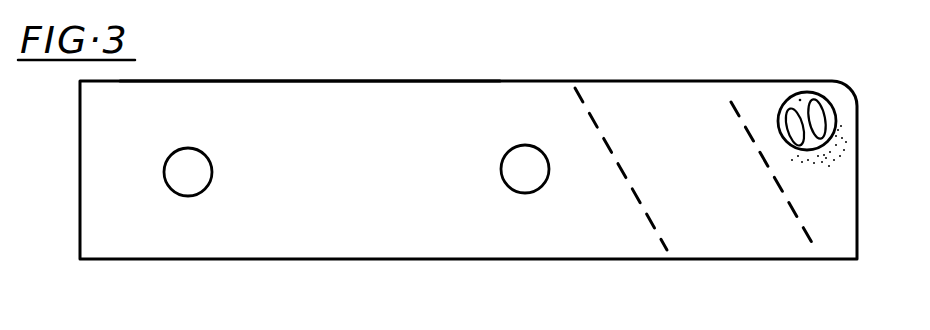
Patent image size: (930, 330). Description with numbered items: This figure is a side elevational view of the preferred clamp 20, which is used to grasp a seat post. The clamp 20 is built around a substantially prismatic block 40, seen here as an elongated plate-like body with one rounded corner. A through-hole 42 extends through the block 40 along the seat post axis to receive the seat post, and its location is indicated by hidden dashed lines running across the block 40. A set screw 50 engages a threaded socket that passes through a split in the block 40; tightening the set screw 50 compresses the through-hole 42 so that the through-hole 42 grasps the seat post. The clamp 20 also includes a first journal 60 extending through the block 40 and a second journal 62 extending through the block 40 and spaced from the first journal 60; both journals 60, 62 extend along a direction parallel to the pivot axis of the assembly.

The clamp 20 is at (468, 150).
The prismatic block 40 is at (310, 72).
The through-hole 42 is at (695, 169).
The set screw 50 is at (812, 156).
The first journal 60 is at (182, 186).
The second journal 62 is at (522, 184).